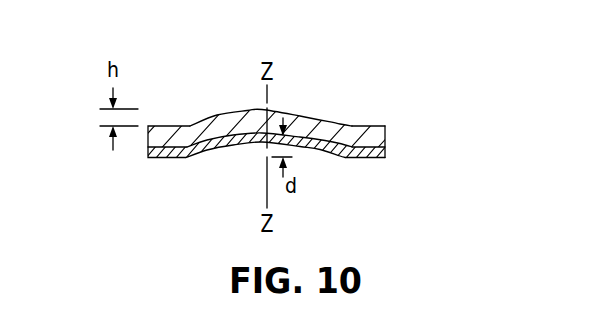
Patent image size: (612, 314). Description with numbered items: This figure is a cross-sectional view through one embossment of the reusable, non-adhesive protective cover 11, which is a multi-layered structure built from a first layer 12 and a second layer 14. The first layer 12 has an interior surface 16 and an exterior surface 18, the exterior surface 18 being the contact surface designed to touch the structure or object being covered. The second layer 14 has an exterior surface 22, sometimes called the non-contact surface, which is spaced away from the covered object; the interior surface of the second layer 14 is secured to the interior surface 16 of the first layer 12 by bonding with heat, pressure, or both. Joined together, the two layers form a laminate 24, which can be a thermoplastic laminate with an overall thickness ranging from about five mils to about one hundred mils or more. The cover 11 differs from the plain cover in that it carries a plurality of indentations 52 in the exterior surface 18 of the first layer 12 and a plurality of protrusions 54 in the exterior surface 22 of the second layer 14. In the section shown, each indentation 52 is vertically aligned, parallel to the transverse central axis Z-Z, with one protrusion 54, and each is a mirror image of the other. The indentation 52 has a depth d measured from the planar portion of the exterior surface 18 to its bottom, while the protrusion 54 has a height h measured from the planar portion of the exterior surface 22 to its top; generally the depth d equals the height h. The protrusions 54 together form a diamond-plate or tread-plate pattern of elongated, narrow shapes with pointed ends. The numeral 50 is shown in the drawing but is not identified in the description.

The reusable, non-adhesive protective cover 11 is at (418, 91).
The first layer 12 is at (396, 154).
The second layer 14 is at (368, 138).
The interior surface 16 is at (353, 147).
The exterior surface 18 is at (366, 158).
The exterior surface 22 is at (361, 126).
The laminate 24 is at (132, 151).
The second end block 50 is at (157, 147).
The indentations 52 is at (200, 151).
The protrusions 54 is at (212, 117).